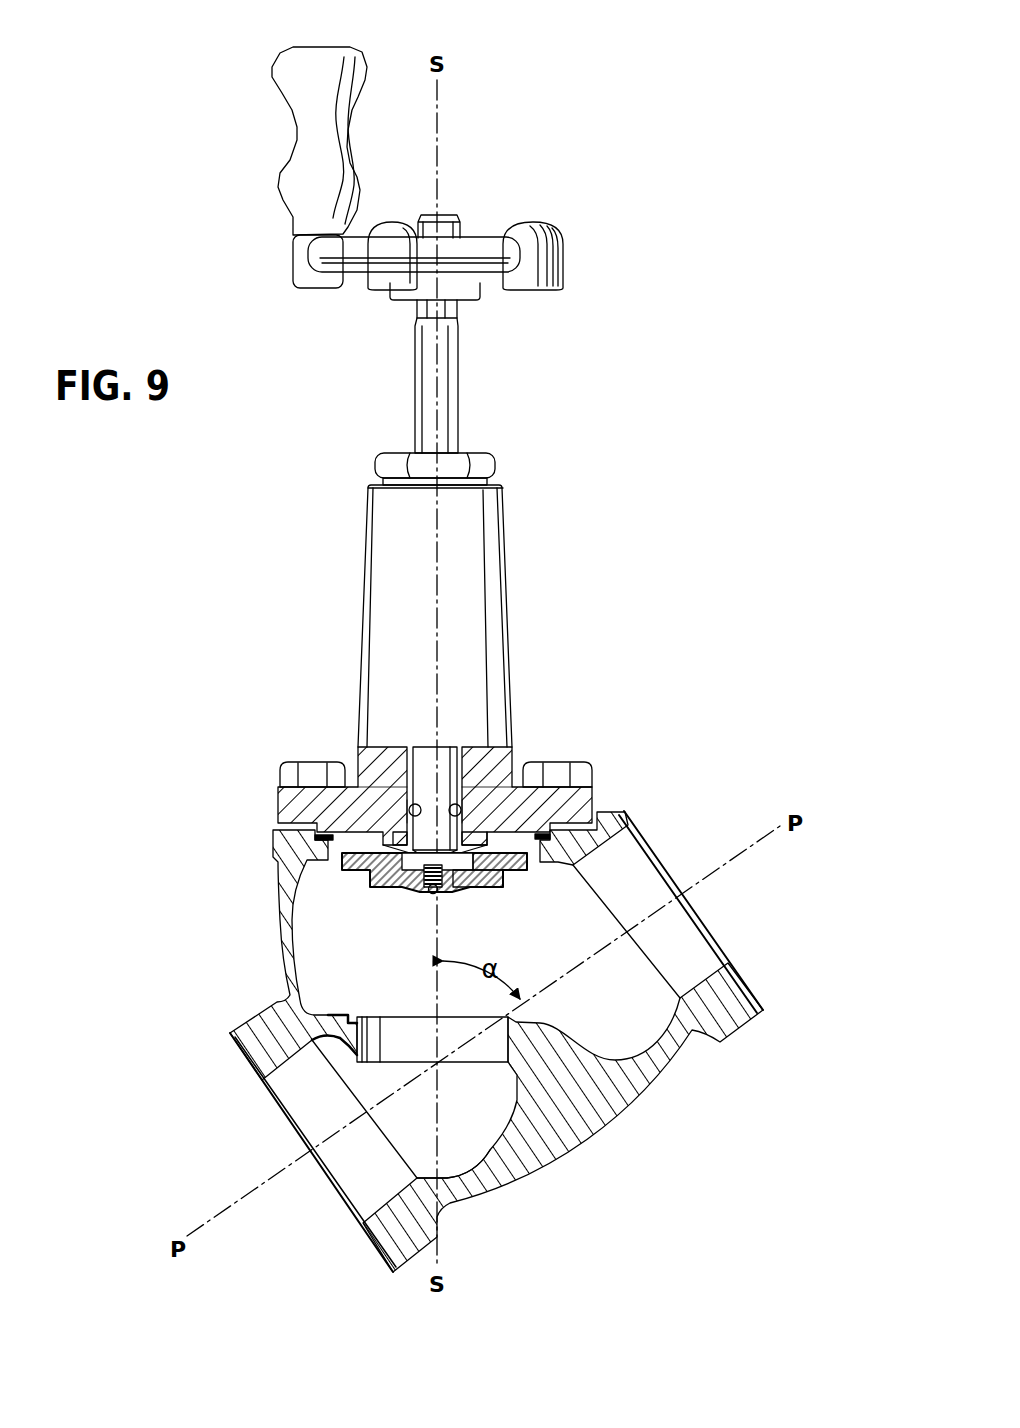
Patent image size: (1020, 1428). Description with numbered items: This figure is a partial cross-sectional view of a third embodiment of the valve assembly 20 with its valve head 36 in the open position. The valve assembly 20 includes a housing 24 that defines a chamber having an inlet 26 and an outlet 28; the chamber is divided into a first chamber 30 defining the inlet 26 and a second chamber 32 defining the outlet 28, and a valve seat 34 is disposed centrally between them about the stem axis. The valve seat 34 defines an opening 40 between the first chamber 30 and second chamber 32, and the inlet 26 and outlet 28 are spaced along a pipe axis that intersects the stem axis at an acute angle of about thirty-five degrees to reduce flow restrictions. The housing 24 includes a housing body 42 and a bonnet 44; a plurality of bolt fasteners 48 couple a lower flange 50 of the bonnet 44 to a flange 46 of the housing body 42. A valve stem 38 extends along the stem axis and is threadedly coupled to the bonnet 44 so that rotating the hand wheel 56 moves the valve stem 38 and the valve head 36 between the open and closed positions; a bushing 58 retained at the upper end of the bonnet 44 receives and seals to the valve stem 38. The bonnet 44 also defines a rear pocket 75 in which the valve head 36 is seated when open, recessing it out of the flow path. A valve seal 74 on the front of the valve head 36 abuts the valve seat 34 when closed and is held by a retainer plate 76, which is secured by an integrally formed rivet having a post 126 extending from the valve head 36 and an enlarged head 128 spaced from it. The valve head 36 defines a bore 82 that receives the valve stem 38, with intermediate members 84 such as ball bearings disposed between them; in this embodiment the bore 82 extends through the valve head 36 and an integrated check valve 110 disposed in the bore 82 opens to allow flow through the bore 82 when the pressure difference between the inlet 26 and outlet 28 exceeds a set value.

The valve assembly 20 is at (615, 688).
The housing 24 is at (660, 1132).
The inlet 26 is at (305, 1114).
The outlet 28 is at (681, 931).
The first chamber 30 is at (473, 1147).
The second chamber 32 is at (641, 1028).
The valve seat 34 is at (353, 1016).
The valve head 36 is at (537, 843).
The valve stem 38 is at (452, 407).
The opening 40 is at (415, 1042).
The housing body 42 is at (572, 1138).
The bonnet 44 is at (492, 542).
The flange 46 is at (282, 849).
The bolt fasteners 48 is at (312, 770).
The lower flange 50 is at (287, 818).
The hand wheel 56 is at (540, 252).
The bushing 58 is at (487, 463).
The valve seal 74 is at (350, 870).
The rear pocket 75 is at (358, 792).
The retainer plate 76 is at (472, 884).
The bore 82 is at (432, 890).
The intermediate members 84 is at (456, 804).
The check valve 110 is at (442, 900).
The post 126 is at (421, 878).
The enlarged head 128 is at (487, 888).